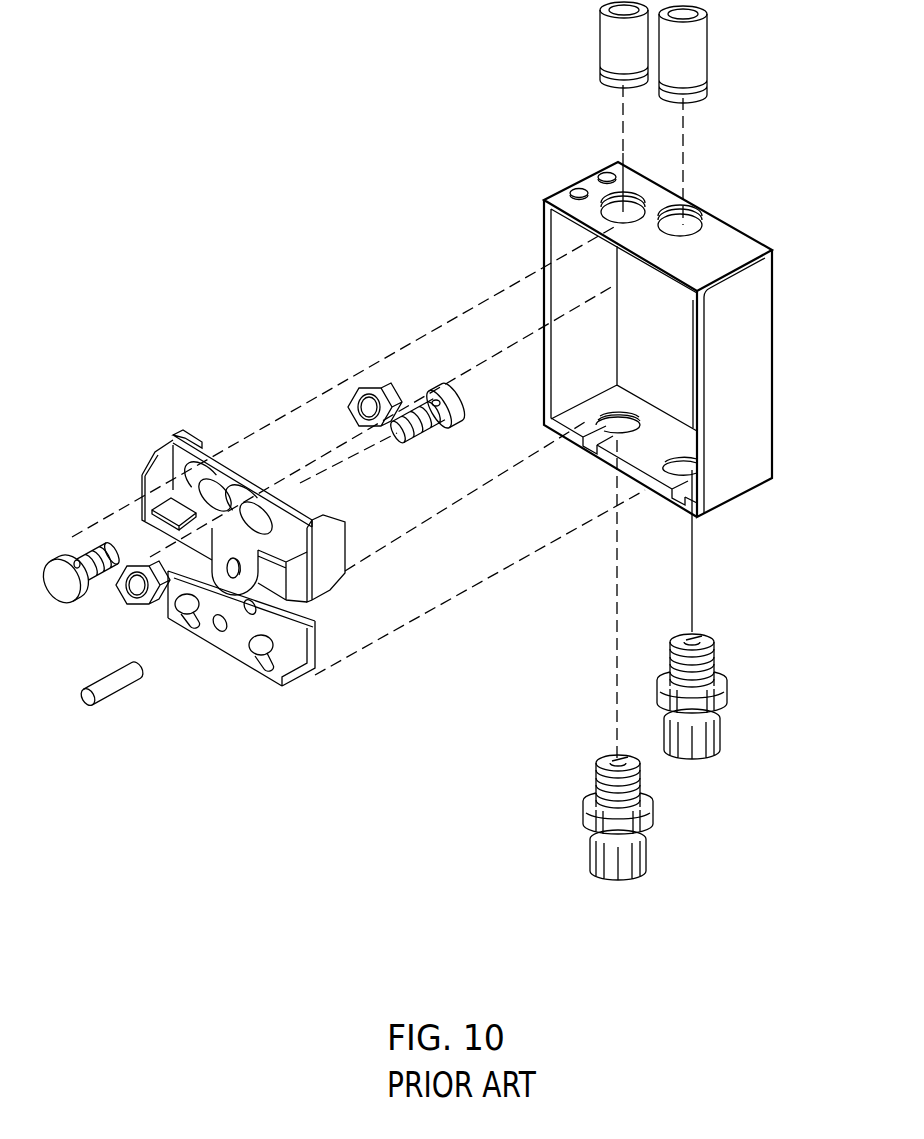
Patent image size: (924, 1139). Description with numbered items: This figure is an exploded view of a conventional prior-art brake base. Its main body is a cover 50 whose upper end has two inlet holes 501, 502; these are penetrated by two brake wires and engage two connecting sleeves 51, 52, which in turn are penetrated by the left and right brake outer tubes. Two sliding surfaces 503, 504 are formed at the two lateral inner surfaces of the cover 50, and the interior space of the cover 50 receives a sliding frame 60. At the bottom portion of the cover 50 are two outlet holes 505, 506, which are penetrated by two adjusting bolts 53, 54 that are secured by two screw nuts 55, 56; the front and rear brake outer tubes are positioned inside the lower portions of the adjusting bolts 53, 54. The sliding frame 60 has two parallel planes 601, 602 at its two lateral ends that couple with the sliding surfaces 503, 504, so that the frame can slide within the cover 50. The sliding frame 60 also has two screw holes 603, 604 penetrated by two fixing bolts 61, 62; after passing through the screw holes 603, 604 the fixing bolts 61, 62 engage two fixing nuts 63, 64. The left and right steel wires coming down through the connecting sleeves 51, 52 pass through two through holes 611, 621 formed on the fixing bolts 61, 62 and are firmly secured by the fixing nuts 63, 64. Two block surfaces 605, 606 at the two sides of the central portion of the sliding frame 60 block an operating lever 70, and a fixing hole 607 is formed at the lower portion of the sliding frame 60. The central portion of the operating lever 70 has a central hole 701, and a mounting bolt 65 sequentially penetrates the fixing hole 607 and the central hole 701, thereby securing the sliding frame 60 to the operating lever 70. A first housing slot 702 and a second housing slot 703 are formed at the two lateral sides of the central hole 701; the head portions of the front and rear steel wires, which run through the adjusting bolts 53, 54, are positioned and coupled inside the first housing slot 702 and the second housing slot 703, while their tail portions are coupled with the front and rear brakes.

The cover 50 is at (760, 347).
The inlet hole 501 is at (640, 200).
The inlet hole 502 is at (707, 220).
The sliding surface 503 is at (543, 268).
The sliding surface 504 is at (693, 370).
The outlet hole 505 is at (592, 440).
The outlet hole 506 is at (685, 487).
The connecting sleeve 51 is at (608, 47).
The connecting sleeve 52 is at (700, 62).
The adjusting bolt 53 is at (659, 855).
The adjusting bolt 54 is at (712, 735).
The screw nut 55 is at (662, 794).
The screw nut 56 is at (727, 686).
The sliding frame 60 is at (178, 467).
The parallel plane 601 is at (140, 498).
The parallel plane 602 is at (345, 545).
The screw hole 603 is at (215, 470).
The screw hole 604 is at (265, 500).
The block surface 605 is at (158, 505).
The block surface 606 is at (328, 592).
The fixing hole 607 is at (237, 563).
The fixing bolt 61 is at (427, 437).
The through hole 611 is at (435, 398).
The fixing bolt 62 is at (65, 597).
The through hole 621 is at (73, 560).
The fixing nut 63 is at (143, 605).
The fixing nut 64 is at (357, 373).
The mounting bolt 65 is at (113, 693).
The operating lever 70 is at (318, 652).
The central hole 701 is at (222, 632).
The first housing slot 702 is at (296, 670).
The second housing slot 703 is at (178, 614).